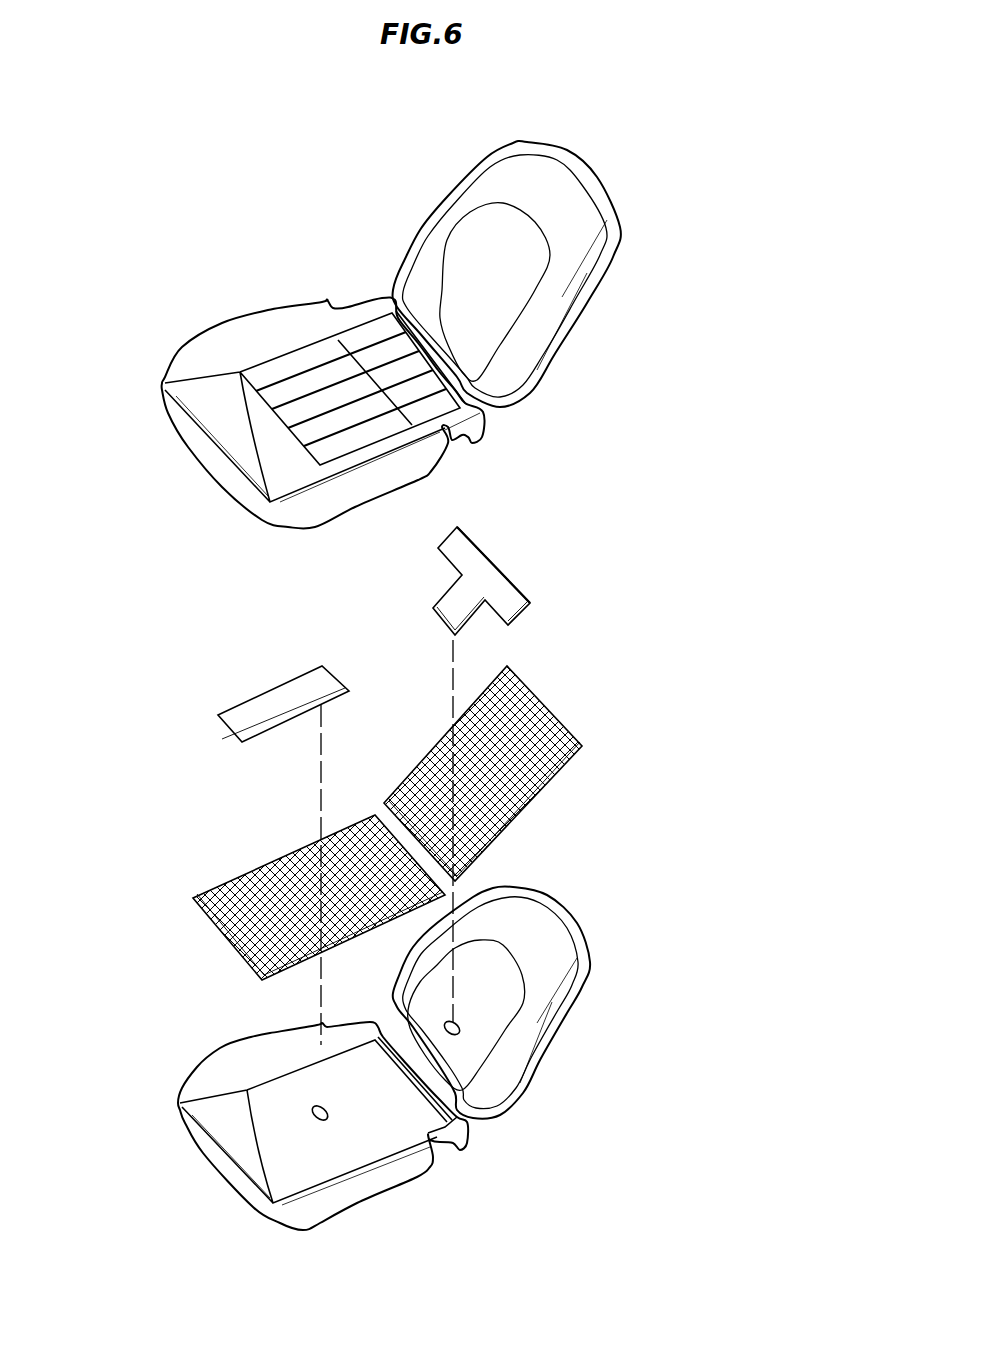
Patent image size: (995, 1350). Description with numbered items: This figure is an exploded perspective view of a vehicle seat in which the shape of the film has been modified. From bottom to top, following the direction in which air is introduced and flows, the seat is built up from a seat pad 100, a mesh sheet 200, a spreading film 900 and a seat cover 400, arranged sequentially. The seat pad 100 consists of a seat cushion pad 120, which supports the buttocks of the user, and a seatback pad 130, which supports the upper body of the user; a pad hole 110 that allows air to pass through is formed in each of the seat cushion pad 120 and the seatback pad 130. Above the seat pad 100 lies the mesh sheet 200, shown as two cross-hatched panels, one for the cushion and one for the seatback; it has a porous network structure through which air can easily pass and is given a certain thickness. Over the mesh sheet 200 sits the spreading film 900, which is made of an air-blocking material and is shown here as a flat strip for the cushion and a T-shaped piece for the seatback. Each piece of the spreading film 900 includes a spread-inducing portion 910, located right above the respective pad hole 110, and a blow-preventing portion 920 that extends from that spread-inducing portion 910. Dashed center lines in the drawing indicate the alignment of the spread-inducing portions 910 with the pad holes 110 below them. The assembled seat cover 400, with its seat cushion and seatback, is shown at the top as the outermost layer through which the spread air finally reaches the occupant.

The seat pad 100 is at (426, 1058).
The pad hole 110 is at (443, 1028).
The seat cushion pad 120 is at (440, 1140).
The seatback pad 130 is at (497, 1050).
The mesh sheet 200 is at (341, 824).
The seat cover 400 is at (423, 257).
The spreading film 900 is at (381, 617).
The spread-inducing portion 910 is at (320, 684).
The blow-preventing portion 920 is at (234, 708).